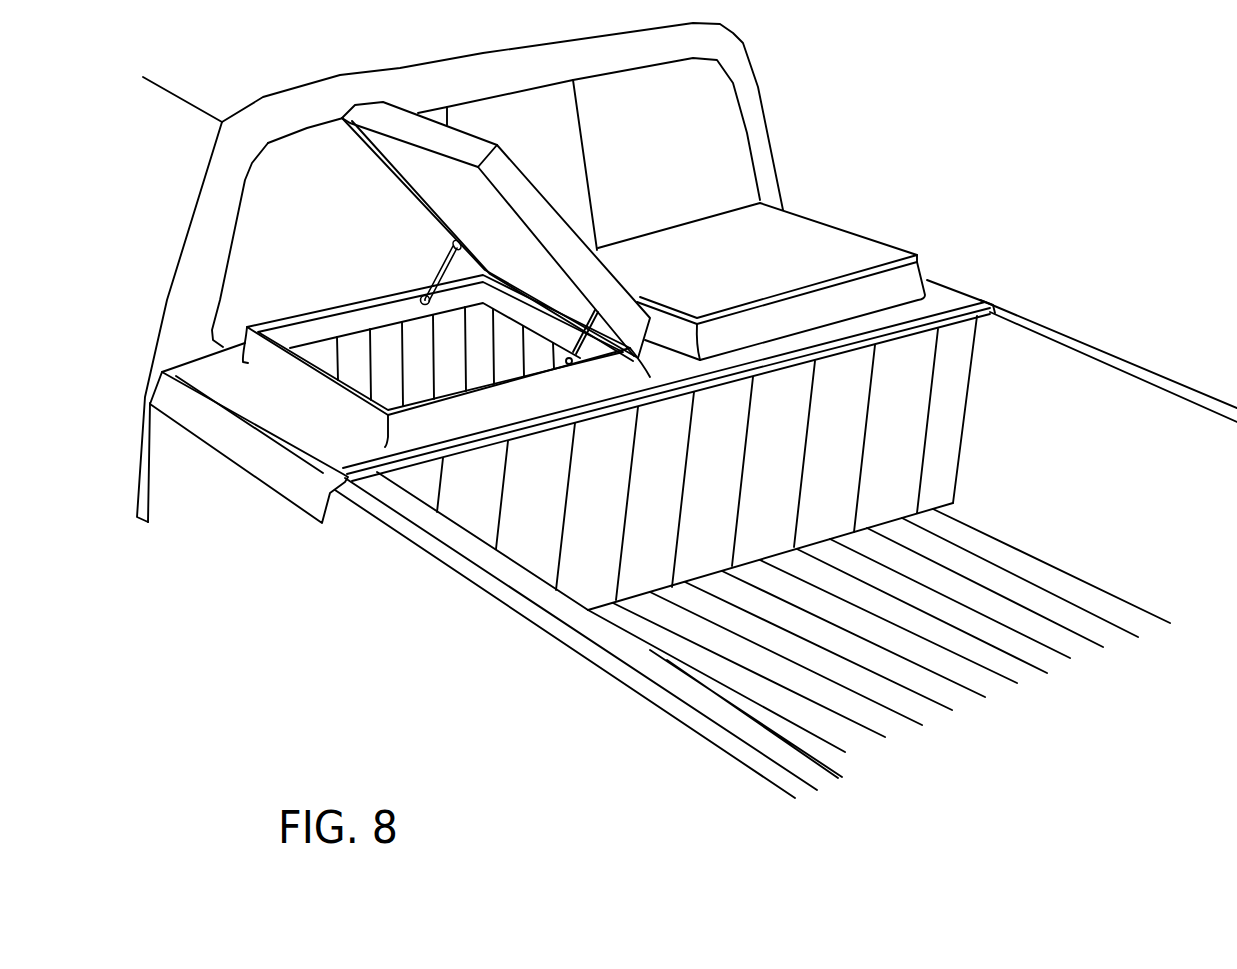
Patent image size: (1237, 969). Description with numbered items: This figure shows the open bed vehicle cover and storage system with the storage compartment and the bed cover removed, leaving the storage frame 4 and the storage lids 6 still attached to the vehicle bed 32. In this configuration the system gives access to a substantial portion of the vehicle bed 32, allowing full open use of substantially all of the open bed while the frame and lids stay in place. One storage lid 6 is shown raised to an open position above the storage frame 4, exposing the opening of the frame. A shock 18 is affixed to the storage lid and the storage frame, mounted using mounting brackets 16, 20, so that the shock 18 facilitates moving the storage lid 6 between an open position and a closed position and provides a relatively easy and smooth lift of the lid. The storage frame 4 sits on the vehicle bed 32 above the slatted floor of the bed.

The storage frame 4 is at (322, 432).
The storage lid 6 is at (770, 230).
The mounting bracket 16 is at (442, 244).
The shock 18 is at (423, 268).
The mounting bracket 20 is at (405, 299).
The vehicle bed 32 is at (870, 575).